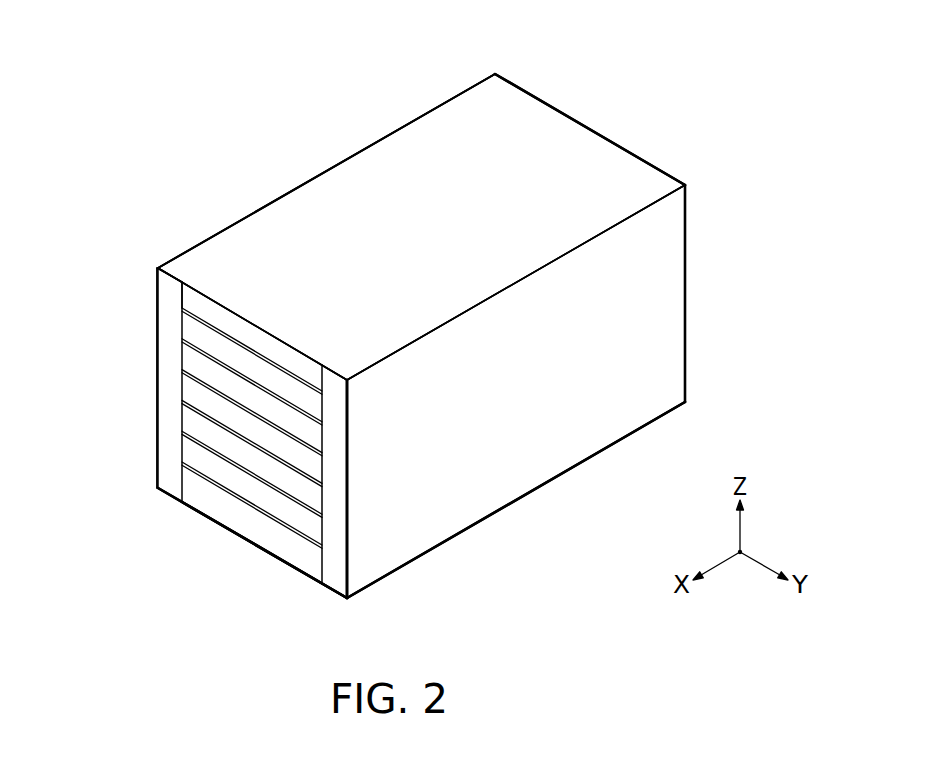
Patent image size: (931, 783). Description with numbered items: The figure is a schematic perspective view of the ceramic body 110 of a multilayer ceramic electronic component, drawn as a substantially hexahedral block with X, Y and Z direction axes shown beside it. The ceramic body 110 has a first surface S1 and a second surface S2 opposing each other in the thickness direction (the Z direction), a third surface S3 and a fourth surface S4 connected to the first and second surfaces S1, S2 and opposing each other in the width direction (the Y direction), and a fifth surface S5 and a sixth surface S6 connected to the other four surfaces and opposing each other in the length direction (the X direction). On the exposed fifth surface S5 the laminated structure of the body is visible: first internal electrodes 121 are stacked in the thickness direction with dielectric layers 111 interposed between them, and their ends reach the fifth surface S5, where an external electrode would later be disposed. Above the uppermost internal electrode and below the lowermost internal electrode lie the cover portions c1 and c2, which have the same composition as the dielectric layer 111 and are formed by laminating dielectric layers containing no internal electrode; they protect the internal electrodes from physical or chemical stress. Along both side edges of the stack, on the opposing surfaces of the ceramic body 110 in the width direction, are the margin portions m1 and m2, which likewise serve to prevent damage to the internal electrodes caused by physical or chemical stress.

The ceramic body 110 is at (247, 31).
The dielectric layer 111 is at (168, 367).
The first internal electrode 121 is at (210, 331).
The first surface S1 is at (421, 146).
The second surface S2 is at (477, 500).
The third surface S3 is at (582, 423).
The fourth surface S4 is at (262, 227).
The fifth surface S5 is at (231, 497).
The sixth surface S6 is at (598, 153).
The cover portion c1 is at (190, 299).
The cover portion c2 is at (282, 548).
The margin portion m1 is at (168, 487).
The margin portion m2 is at (338, 580).